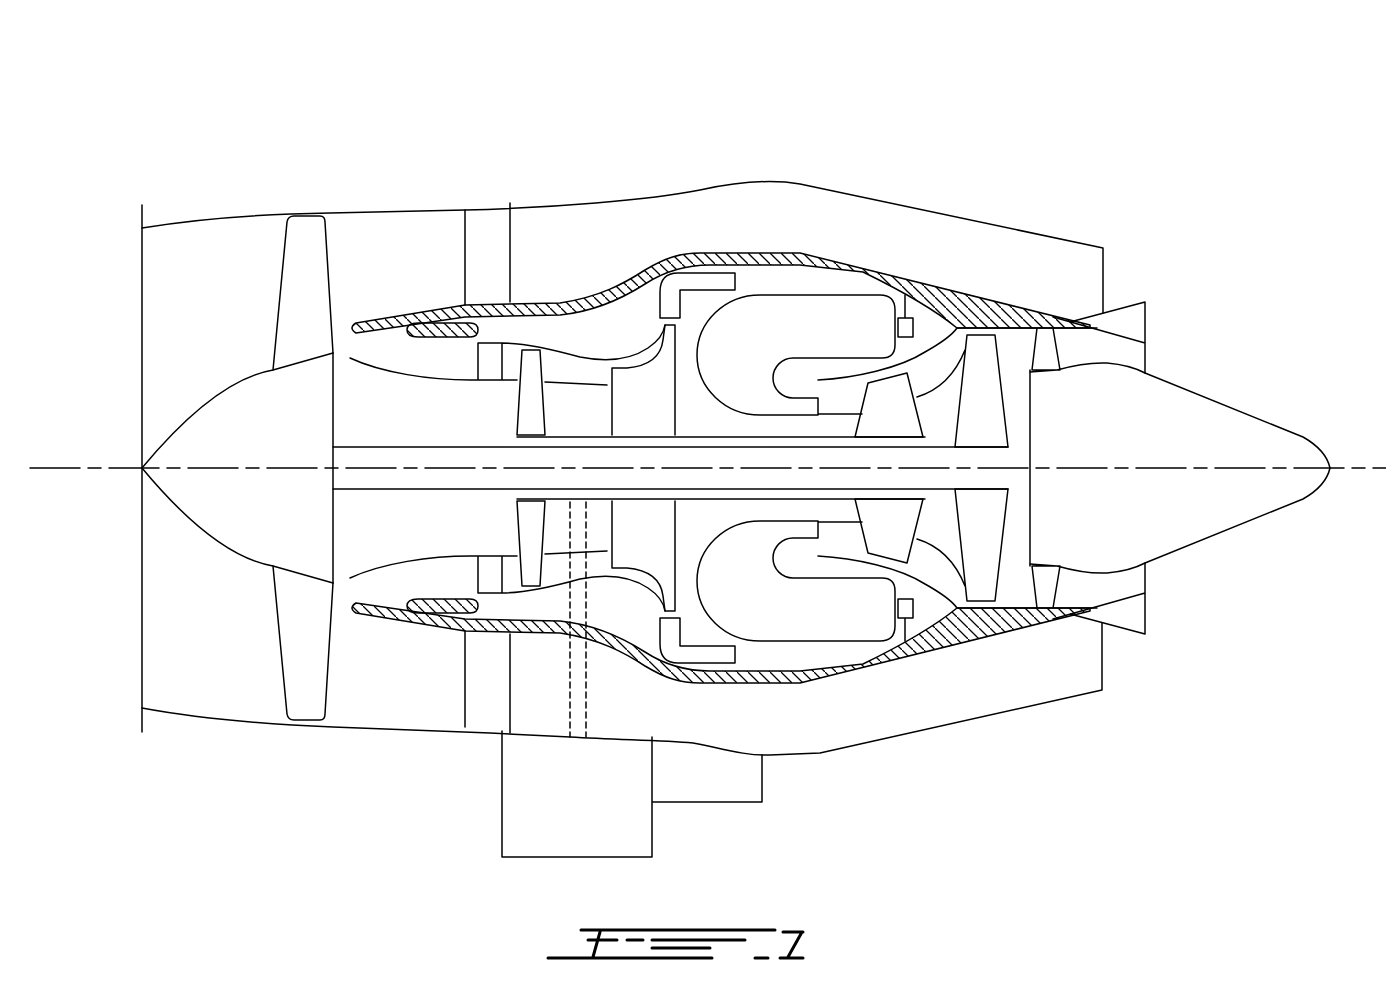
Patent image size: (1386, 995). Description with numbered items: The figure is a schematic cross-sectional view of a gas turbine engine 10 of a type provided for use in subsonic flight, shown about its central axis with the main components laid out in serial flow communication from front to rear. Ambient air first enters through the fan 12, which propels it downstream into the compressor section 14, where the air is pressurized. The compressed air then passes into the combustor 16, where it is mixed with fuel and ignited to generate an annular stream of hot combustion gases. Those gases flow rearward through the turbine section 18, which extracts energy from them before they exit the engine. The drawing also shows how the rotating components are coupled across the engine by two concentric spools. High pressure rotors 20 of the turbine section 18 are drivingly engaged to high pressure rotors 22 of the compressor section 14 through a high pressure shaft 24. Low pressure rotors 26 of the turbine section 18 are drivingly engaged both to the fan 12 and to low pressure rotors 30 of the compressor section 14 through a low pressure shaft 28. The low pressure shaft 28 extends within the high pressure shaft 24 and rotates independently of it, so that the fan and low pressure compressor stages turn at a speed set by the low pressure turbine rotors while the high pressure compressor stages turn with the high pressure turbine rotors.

The gas turbine engine 10 is at (910, 172).
The fan 12 is at (300, 632).
The compressor section 14 is at (567, 363).
The combustor 16 is at (798, 318).
The turbine section 18 is at (938, 540).
The high pressure rotor(s) of the turbine section 20 is at (583, 437).
The high pressure rotor(s) of the compressor section 22 is at (620, 447).
The high pressure shaft 24 is at (647, 437).
The low pressure rotor(s) of the turbine section 26 is at (393, 490).
The low pressure shaft 28 is at (542, 490).
The low pressure rotor(s) of the compressor section 30 is at (588, 490).